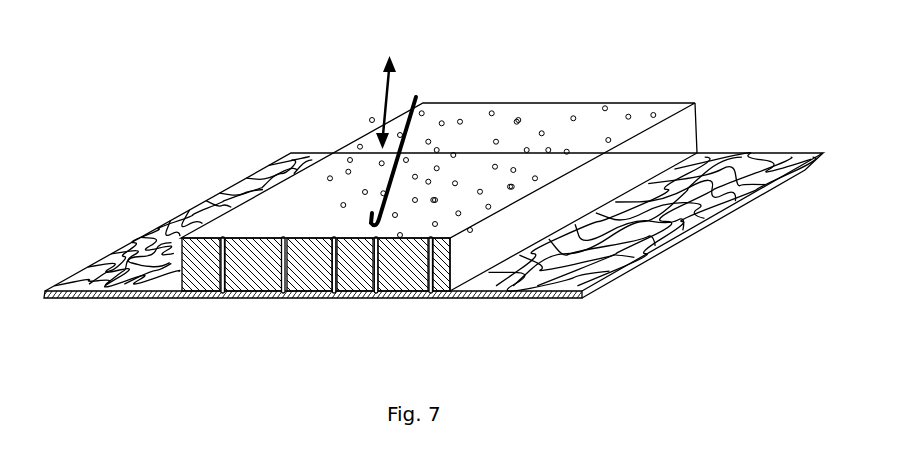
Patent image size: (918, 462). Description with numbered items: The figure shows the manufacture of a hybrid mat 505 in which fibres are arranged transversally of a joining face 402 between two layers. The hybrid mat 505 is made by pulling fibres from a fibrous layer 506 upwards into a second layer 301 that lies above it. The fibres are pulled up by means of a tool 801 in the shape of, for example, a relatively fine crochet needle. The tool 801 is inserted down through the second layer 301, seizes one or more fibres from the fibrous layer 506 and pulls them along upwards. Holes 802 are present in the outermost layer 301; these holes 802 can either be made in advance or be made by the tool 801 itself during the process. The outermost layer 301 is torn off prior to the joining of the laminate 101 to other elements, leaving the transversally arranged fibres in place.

The laminate 101 is at (376, 287).
The second layer 301 is at (672, 137).
The joining face 402 is at (448, 297).
The hybrid mat 505 is at (132, 218).
The fibrous layer 506 is at (641, 258).
The tool 801 is at (405, 139).
The holes 802 is at (572, 115).